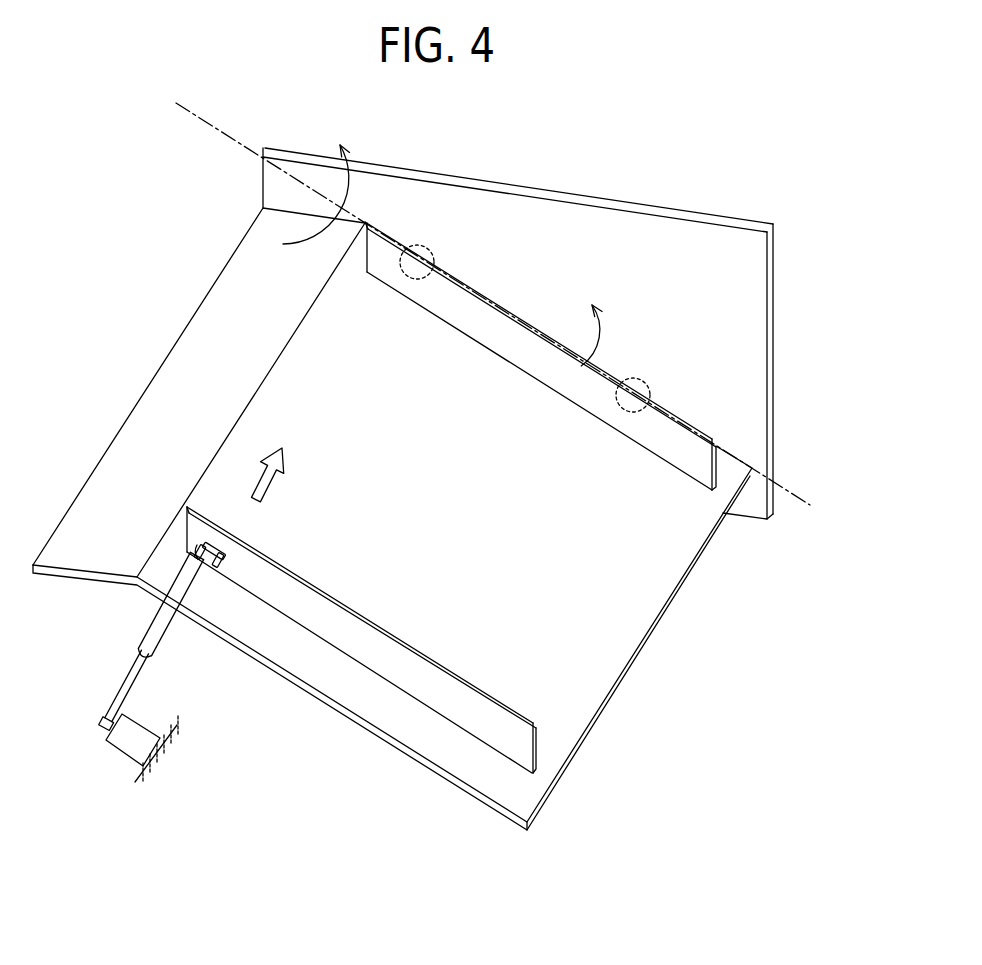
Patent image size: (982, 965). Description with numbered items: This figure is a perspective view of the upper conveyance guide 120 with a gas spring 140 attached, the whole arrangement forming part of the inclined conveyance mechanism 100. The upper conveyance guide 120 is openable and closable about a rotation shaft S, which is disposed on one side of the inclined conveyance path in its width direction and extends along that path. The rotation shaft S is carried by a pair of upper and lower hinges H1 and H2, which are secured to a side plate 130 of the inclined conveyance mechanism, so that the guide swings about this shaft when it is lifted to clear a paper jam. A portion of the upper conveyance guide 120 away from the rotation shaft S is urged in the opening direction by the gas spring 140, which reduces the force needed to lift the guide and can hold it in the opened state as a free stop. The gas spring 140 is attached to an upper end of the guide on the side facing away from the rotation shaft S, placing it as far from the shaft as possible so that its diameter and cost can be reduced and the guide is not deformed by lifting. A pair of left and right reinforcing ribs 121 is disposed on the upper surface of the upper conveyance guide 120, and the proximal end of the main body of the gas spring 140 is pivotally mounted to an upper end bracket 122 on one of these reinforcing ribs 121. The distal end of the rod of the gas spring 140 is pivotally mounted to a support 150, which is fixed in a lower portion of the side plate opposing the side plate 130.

The display apparatus 100 is at (435, 489).
The upper conveyance guide 120 is at (680, 603).
The reinforcing ribs 121 is at (497, 338).
The upper end bracket 122 is at (223, 557).
The side plate 130 is at (743, 293).
The gas spring 140 is at (158, 623).
The support 150 is at (128, 748).
The rotation shaft S is at (793, 490).
The upper hinge H1 is at (424, 246).
The lower hinge H2 is at (640, 378).